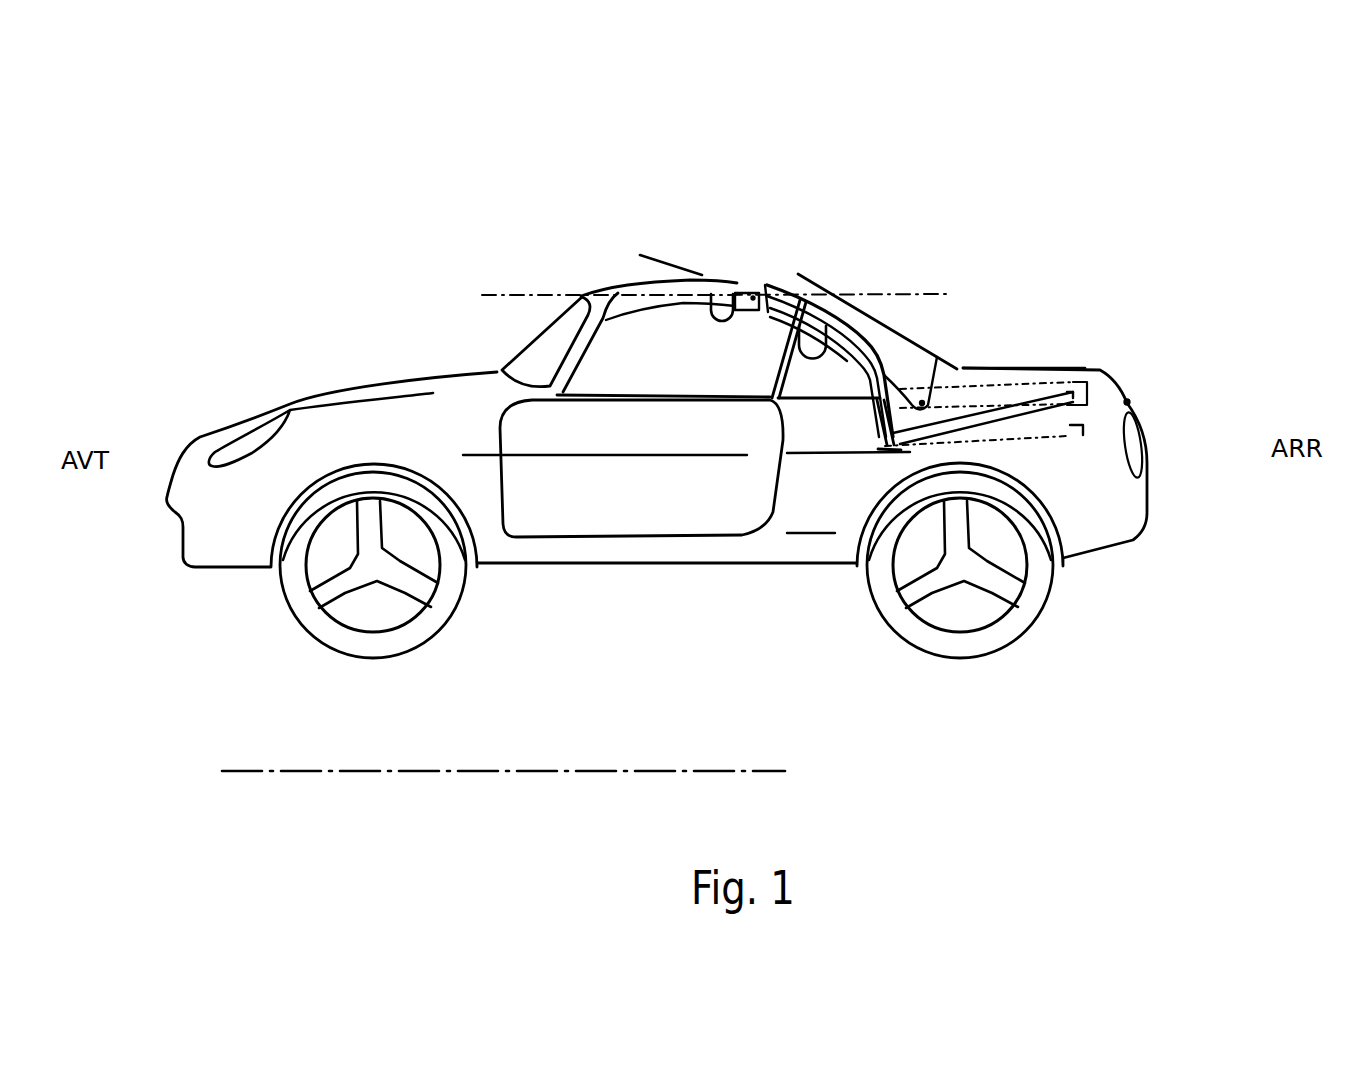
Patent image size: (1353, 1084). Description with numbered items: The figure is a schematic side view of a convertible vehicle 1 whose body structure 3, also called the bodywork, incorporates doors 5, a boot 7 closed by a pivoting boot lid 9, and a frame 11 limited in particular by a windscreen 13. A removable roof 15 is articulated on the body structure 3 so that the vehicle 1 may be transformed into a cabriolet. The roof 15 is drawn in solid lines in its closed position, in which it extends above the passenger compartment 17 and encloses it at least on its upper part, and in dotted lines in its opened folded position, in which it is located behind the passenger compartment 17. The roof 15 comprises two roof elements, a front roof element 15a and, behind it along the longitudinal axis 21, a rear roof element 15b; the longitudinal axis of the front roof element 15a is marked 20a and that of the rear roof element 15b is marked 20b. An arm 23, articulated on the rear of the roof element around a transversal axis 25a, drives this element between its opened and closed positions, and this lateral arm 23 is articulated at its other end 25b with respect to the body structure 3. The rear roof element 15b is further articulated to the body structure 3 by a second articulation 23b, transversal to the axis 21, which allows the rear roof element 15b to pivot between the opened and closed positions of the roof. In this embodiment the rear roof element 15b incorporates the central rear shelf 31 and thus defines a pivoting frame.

The vehicle 1 is at (271, 378).
The body structure 3 is at (792, 556).
The doors 5 is at (617, 510).
The boot 7 is at (1081, 440).
The boot lid 9 is at (1050, 367).
The frame 11 is at (587, 340).
The windscreen 13 is at (538, 355).
The removable roof 15 is at (875, 292).
The front roof element 15a is at (637, 284).
The rear roof element 15b is at (937, 357).
The passenger compartment 17 is at (640, 367).
The longitudinal axis of the front roof element 20a is at (572, 296).
The longitudinal axis of the rear roof element 20b is at (678, 272).
The axis 21 is at (515, 765).
The arm 23 is at (803, 300).
The second articulation 23b is at (915, 400).
The transversal axis 25a is at (713, 303).
The other end of the arm 25b is at (893, 396).
The central rear shelf 31 is at (907, 350).